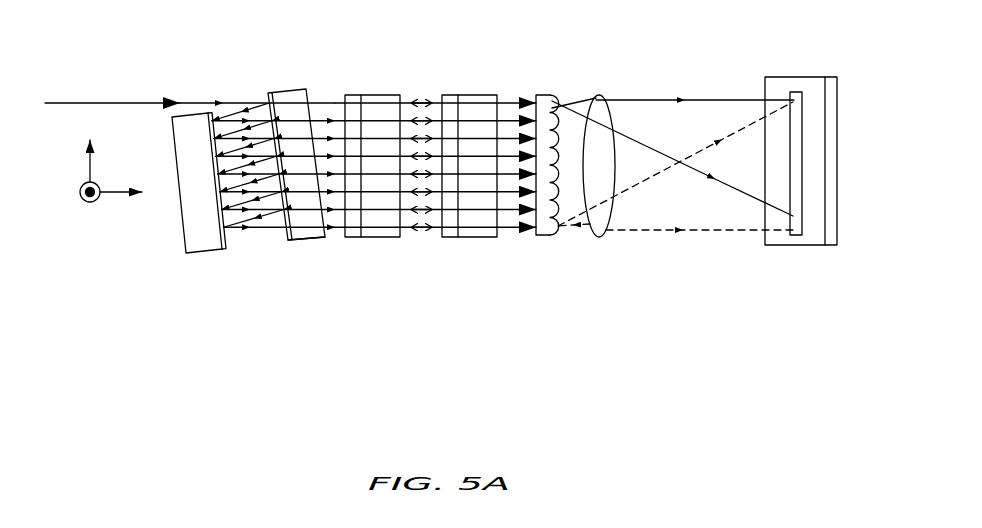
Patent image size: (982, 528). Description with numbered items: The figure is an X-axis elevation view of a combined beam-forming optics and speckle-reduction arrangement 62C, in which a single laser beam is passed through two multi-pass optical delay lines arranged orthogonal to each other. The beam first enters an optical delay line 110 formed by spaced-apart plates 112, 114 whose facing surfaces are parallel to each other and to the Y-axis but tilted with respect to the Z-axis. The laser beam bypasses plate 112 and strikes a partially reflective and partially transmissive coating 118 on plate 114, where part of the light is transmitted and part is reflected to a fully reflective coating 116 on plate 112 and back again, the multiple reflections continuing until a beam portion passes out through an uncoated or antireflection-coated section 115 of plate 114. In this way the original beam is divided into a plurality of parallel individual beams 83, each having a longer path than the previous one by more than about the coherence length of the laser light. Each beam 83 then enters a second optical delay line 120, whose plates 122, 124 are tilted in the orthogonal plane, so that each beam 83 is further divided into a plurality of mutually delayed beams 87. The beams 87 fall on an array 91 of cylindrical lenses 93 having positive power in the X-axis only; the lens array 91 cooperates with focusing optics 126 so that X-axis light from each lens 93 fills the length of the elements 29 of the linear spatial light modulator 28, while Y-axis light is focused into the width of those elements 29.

The linear spatial light modulator 28 is at (815, 248).
The elements of modulator 29 is at (793, 123).
The combined beam-forming optics and speckle-reduction arrangement 62C is at (542, 373).
The individual beams 83 is at (316, 138).
The beams 87 is at (502, 120).
The array of cylindrical lenses 91 is at (546, 243).
The cylindrical lens 93 is at (558, 224).
The optical delay line 110 is at (335, 282).
The plate 112 is at (183, 243).
The plate 114 is at (288, 86).
The uncoated section of plate surface 115 is at (288, 236).
The fully reflective coating 116 is at (222, 218).
The partially reflective and partially transmissive coating 118 is at (269, 95).
The optical delay line 120 is at (498, 78).
The plate 122 is at (379, 241).
The plate 124 is at (480, 241).
The focusing optics 126 is at (609, 243).